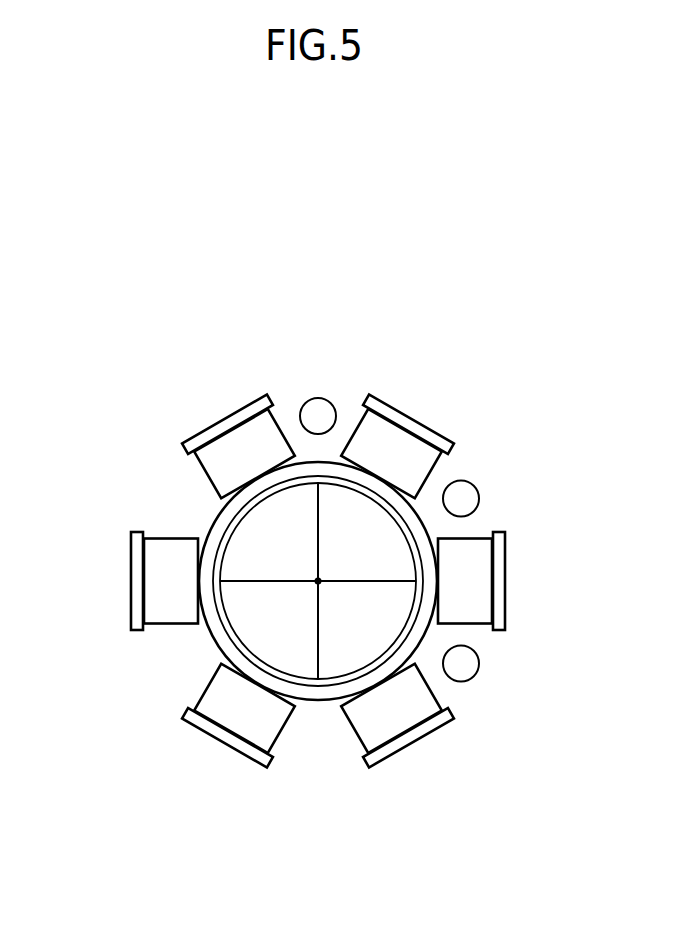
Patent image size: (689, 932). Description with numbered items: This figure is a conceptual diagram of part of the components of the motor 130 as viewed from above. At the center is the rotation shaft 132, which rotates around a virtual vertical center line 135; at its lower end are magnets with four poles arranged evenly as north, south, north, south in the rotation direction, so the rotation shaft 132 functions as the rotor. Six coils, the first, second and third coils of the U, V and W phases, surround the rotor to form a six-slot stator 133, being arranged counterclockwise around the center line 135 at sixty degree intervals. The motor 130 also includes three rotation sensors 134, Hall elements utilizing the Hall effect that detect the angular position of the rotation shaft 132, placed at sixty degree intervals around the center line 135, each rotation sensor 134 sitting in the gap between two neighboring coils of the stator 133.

The motor 130 is at (181, 287).
The rotation shaft 132 is at (244, 546).
The six-slot stator 133 is at (260, 417).
The rotation sensor 134 is at (507, 687).
The center line 135 is at (316, 582).